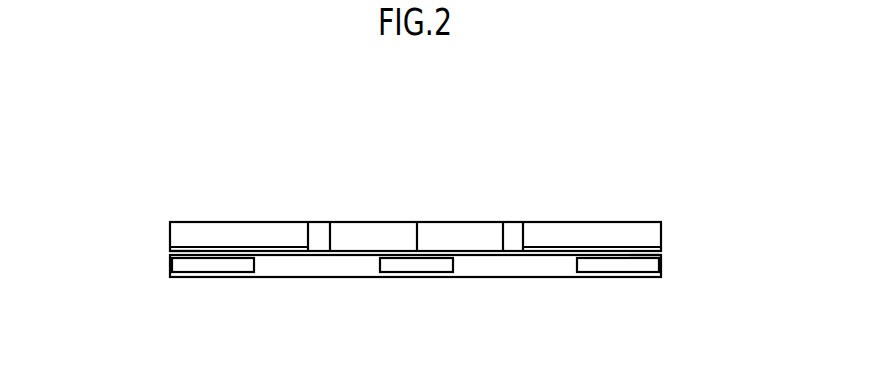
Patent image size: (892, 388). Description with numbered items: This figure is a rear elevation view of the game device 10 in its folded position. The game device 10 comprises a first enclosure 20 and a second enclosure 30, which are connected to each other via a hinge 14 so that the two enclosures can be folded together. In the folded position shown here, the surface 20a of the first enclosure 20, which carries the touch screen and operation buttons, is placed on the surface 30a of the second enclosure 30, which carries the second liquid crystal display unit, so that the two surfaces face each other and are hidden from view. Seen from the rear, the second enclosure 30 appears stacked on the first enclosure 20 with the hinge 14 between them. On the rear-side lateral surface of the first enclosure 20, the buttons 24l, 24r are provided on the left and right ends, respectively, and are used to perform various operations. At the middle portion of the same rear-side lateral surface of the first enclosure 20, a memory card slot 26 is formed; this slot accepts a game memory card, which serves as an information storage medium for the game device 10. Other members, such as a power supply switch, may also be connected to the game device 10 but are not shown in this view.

The game device 10 is at (593, 168).
The hinge 14 is at (452, 222).
The second enclosure 30 is at (178, 222).
The surface of the second enclosure 30a is at (170, 251).
The first enclosure 20 is at (180, 277).
The surface of the first enclosure 20a is at (658, 251).
The button 24r is at (233, 265).
The memory card slot 26 is at (418, 265).
The button 24l is at (620, 265).